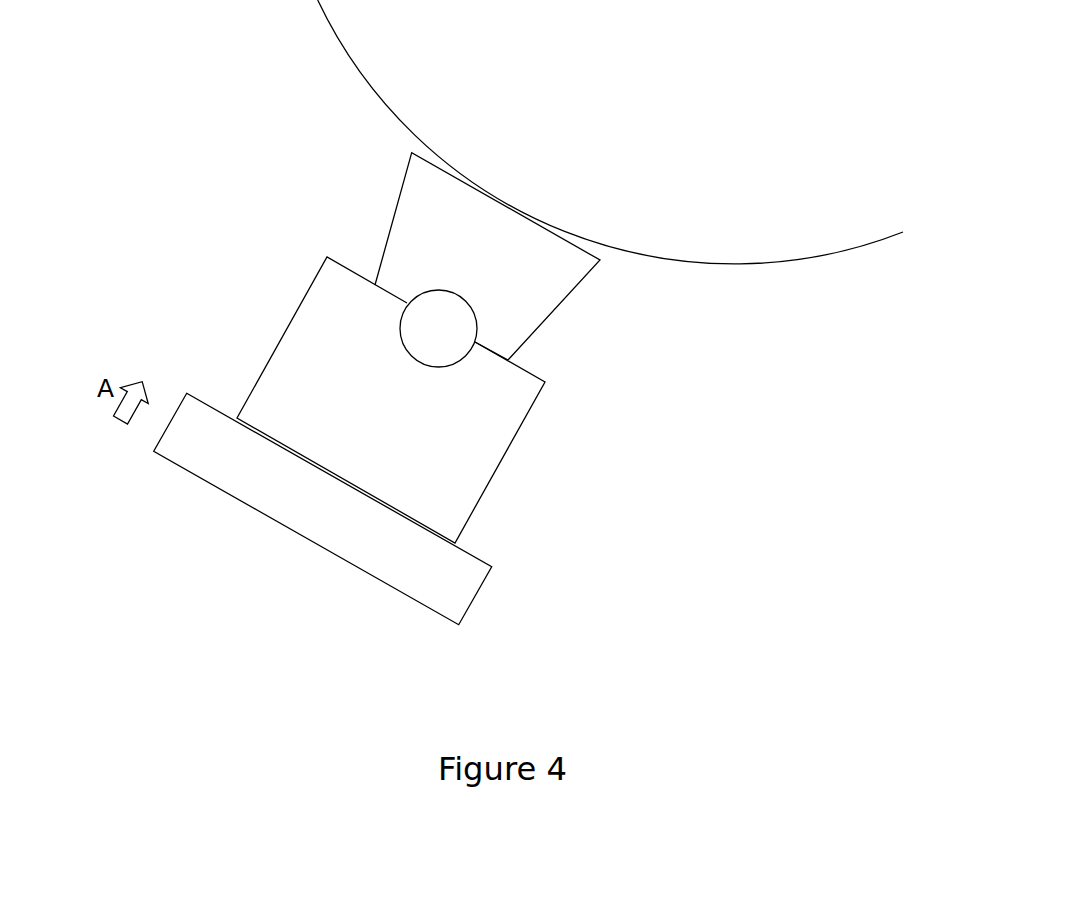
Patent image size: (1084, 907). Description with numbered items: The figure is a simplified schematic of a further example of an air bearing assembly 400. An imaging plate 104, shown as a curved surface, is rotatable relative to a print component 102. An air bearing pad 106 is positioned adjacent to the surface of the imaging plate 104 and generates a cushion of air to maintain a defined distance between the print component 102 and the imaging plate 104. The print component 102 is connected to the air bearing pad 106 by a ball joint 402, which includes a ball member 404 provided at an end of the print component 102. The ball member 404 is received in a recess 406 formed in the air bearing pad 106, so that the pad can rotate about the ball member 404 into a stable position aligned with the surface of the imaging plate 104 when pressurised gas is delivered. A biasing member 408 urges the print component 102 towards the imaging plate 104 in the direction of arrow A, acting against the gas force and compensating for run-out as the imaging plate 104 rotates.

The air bearing assembly 400 is at (270, 156).
The imaging plate 104 is at (609, 93).
The air bearing pad 106 is at (570, 292).
The print component 102 is at (487, 490).
The recess 406 is at (438, 290).
The ball member 404 is at (458, 352).
The ball joint 402 is at (375, 306).
The biasing member 408 is at (473, 585).